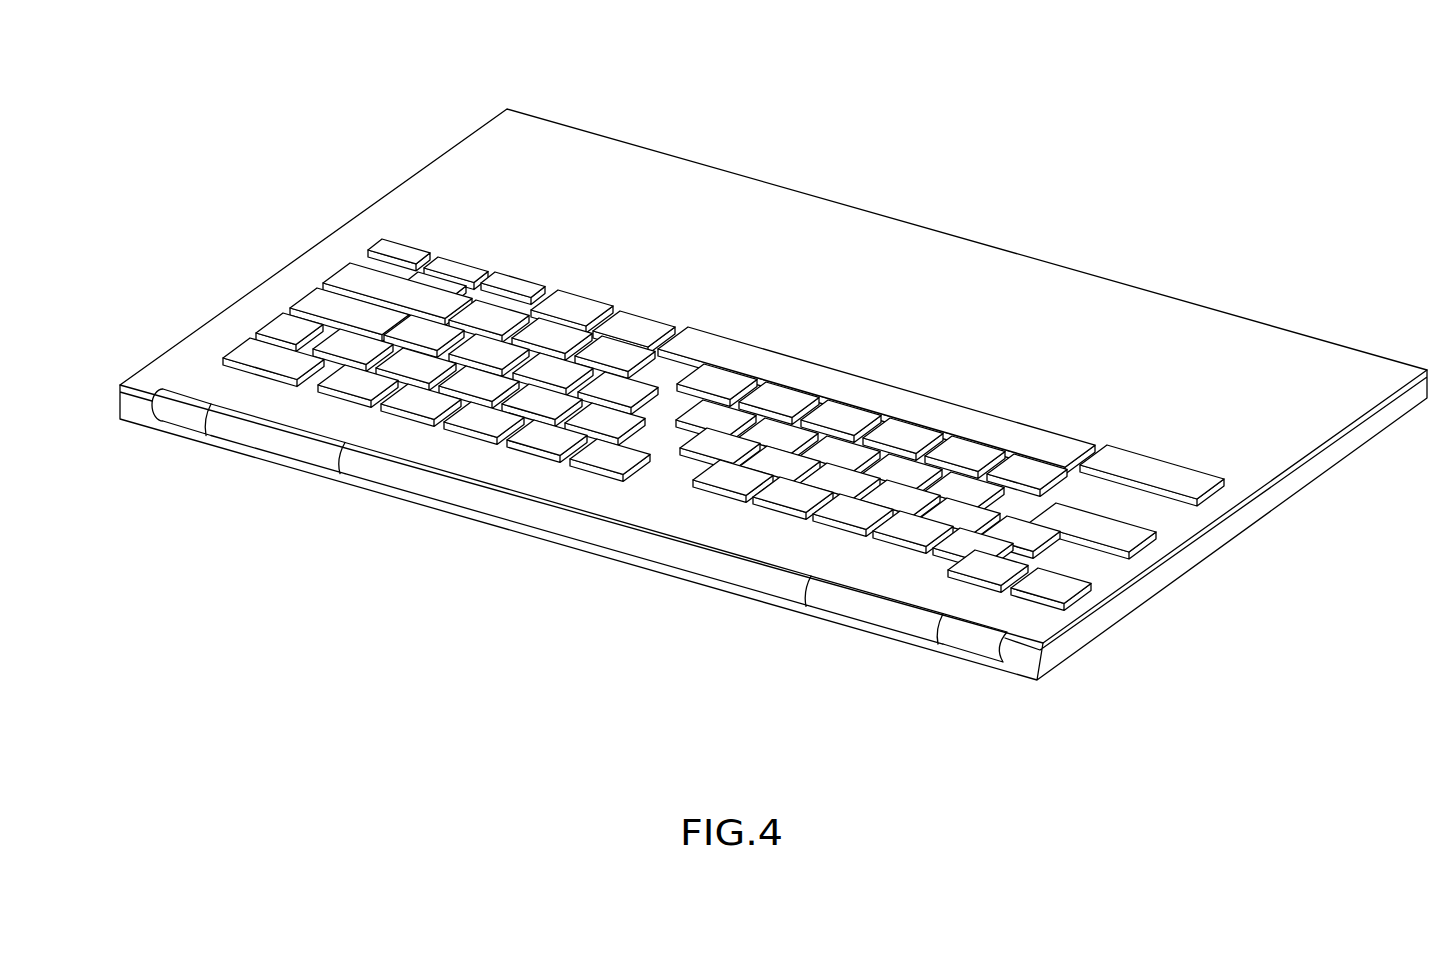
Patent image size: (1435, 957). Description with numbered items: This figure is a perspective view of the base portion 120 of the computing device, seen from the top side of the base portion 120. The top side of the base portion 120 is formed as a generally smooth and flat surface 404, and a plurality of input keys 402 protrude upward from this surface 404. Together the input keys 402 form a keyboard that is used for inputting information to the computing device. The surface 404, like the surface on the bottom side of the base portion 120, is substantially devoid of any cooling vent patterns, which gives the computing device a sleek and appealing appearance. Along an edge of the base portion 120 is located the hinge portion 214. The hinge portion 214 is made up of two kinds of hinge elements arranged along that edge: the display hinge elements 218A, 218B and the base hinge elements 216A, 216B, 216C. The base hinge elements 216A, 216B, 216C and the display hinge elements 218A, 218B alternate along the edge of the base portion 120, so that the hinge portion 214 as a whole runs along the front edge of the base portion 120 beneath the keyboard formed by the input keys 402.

The base portion 120 is at (773, 394).
The surface 404 is at (838, 283).
The input keys 402 is at (1133, 528).
The hinge portion 214 is at (564, 570).
The base hinge element 216A is at (188, 418).
The base hinge element 216B is at (448, 487).
The base hinge element 216C is at (950, 662).
The display hinge element 218A is at (287, 445).
The display hinge element 218B is at (838, 603).